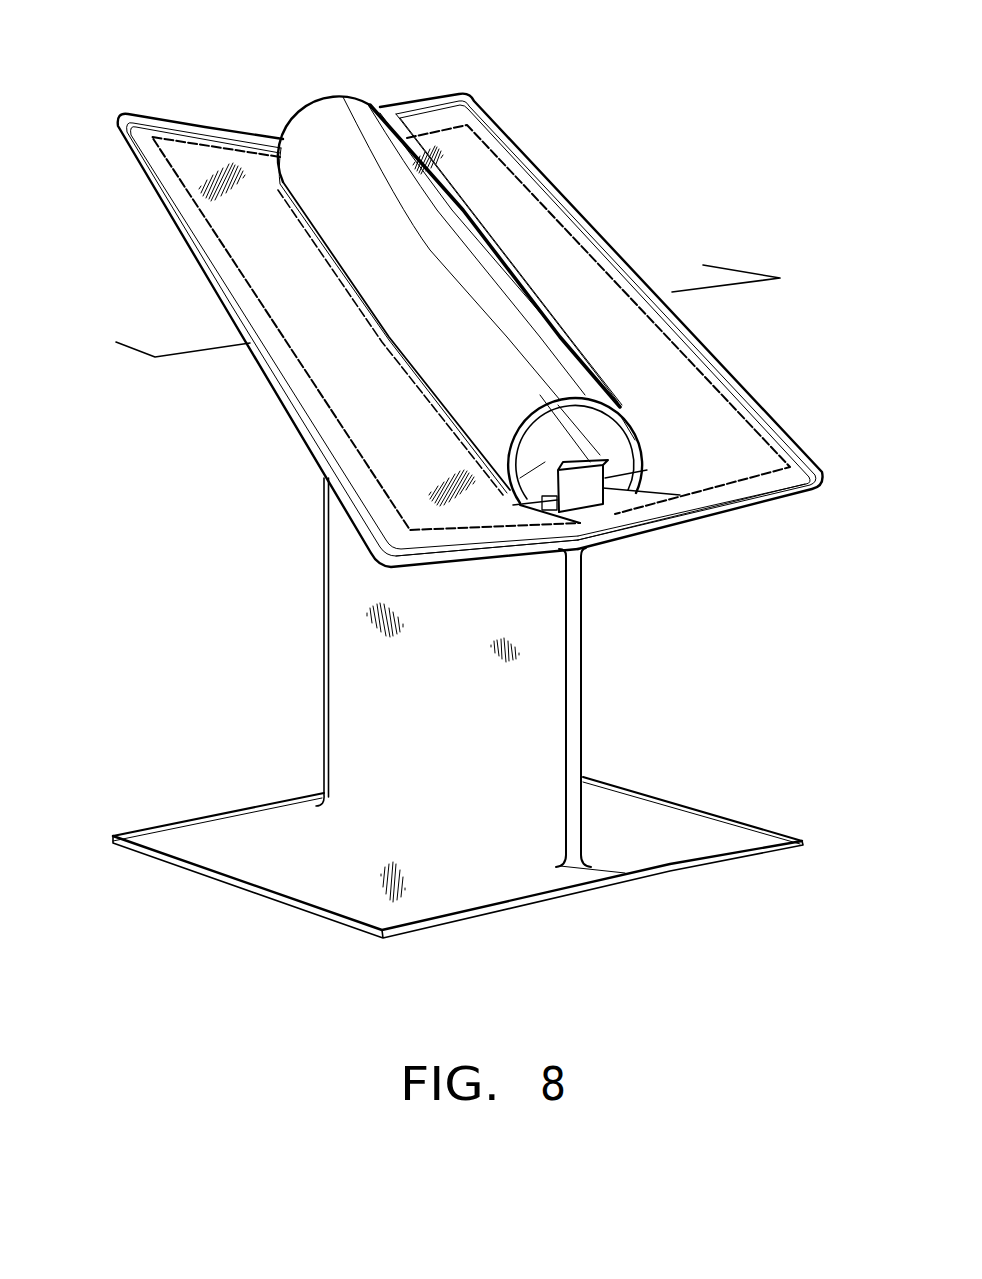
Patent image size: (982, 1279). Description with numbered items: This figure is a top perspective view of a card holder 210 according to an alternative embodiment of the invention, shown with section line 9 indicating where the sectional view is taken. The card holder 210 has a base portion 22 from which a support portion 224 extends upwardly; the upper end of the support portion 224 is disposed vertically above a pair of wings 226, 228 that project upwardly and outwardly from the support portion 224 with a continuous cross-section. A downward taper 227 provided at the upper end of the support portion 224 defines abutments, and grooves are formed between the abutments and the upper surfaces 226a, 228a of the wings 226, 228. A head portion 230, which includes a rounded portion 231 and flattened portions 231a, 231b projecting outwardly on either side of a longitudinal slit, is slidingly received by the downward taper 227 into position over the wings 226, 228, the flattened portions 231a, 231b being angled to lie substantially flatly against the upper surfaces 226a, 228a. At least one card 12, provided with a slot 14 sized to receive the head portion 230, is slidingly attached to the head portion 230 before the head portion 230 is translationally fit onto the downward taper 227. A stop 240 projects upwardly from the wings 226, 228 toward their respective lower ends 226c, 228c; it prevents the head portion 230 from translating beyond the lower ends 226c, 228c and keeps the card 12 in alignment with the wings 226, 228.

The section line 9- 9 is at (434, 300).
The card 12 is at (217, 163).
The slot 14 is at (307, 222).
The base portion 22 is at (663, 823).
The card holder 210 is at (608, 155).
The support portion 224 is at (387, 733).
The wing 226 is at (697, 350).
The upper surface 226a is at (705, 450).
The lower end 226c is at (747, 498).
The downward taper 227 is at (543, 440).
The wing 228 is at (337, 433).
The upper surface 228a is at (440, 460).
The lower end 228c is at (457, 553).
The head portion 230 is at (272, 102).
The rounded portion 231 is at (362, 135).
The flattened portion 231a is at (548, 498).
The flattened portion 231b is at (612, 486).
The stop 240 is at (592, 494).